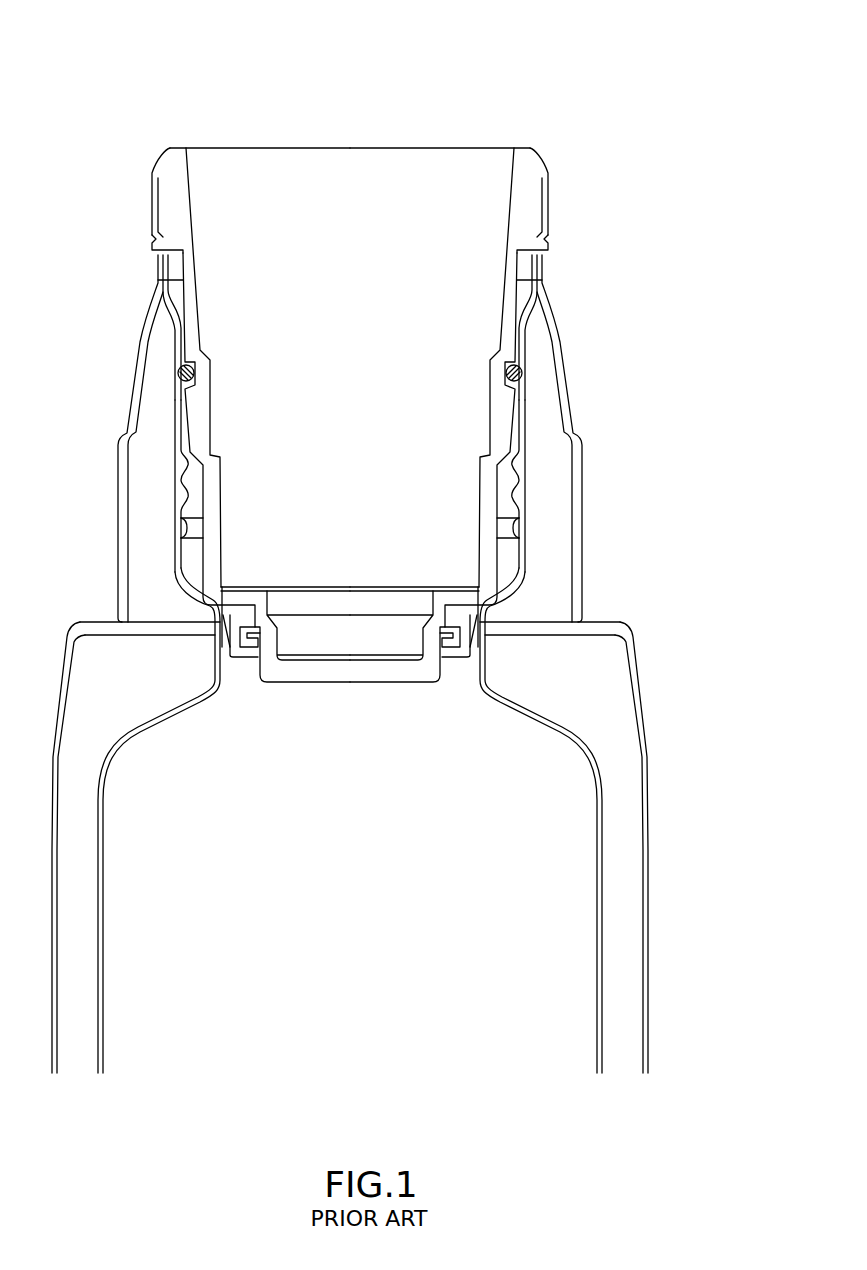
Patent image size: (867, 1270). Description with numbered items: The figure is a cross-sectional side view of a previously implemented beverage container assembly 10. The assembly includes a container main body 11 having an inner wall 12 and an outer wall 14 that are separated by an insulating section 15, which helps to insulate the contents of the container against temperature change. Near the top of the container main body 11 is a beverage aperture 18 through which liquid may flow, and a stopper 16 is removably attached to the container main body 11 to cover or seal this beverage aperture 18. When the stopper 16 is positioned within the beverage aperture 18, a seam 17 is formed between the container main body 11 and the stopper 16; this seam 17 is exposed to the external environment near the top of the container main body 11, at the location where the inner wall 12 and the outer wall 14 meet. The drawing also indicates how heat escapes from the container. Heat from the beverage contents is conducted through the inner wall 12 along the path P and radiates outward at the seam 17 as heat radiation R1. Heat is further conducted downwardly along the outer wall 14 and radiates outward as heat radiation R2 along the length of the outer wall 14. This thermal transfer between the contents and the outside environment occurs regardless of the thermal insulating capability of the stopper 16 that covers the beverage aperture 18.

The beverage container assembly 10 is at (122, 62).
The container main body 11 is at (664, 740).
The inner wall 12 is at (528, 465).
The outer wall 14 is at (580, 525).
The insulating section 15 is at (557, 493).
The stopper 16 is at (552, 135).
The seam 17 is at (548, 257).
The beverage aperture 18 is at (455, 675).
The path P is at (530, 342).
The heat radiation R1 is at (150, 255).
The heat radiation R2 is at (137, 367).